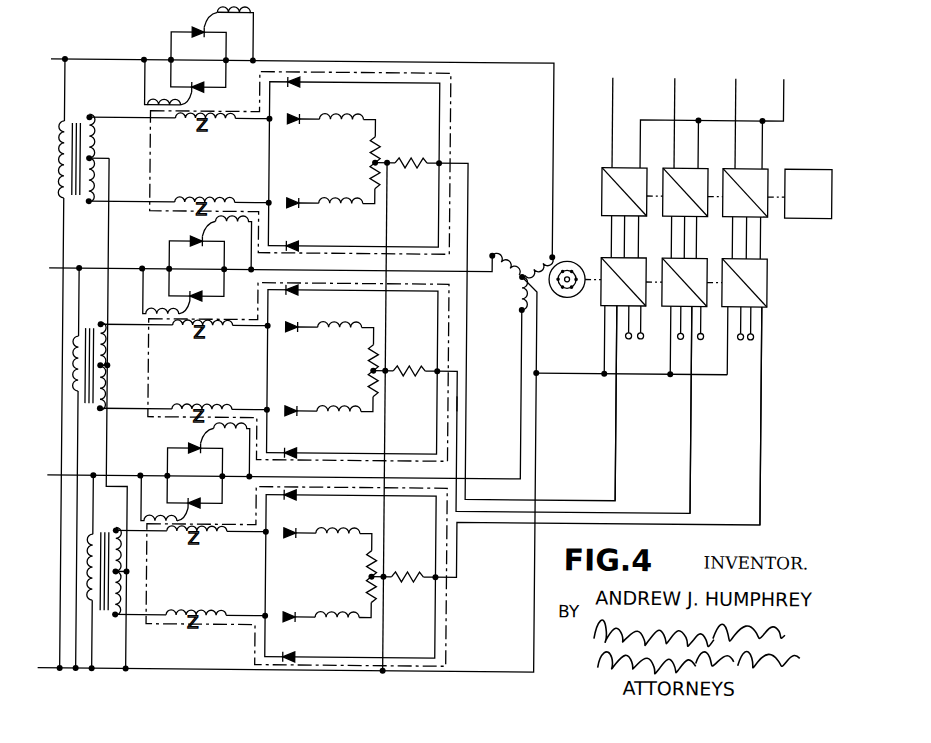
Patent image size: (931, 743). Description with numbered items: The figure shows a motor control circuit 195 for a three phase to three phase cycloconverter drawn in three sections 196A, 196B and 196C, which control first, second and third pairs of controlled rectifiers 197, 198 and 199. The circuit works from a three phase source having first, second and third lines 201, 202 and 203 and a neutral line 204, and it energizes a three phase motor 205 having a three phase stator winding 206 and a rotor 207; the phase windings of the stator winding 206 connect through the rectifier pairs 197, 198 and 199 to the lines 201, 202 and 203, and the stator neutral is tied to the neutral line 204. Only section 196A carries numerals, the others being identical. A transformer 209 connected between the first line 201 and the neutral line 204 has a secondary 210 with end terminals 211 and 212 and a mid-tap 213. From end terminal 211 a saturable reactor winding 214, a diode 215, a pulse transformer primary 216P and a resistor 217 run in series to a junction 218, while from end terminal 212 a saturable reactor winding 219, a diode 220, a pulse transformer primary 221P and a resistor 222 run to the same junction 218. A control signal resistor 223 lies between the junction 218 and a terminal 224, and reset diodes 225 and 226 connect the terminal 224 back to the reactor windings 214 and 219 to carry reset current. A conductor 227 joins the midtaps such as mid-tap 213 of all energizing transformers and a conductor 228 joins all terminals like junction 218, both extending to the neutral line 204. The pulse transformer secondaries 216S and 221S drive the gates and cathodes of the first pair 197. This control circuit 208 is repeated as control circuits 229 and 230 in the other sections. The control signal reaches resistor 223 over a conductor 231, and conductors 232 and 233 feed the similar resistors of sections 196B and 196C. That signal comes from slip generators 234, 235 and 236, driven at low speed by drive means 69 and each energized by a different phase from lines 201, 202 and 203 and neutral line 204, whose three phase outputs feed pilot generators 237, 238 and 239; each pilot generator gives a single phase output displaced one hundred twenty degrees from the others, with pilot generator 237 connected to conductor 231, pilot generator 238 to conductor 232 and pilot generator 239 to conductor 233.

The first line 201 is at (56, 60).
The second line 202 is at (60, 270).
The third line 203 is at (62, 477).
The neutral line 204 is at (62, 670).
The first pair of controlled rectifiers 197 is at (168, 42).
The second pair of controlled rectifiers 198 is at (168, 252).
The third pair of controlled rectifiers 199 is at (168, 460).
The pulse transformer secondary 216S is at (255, 15).
The pulse transformer secondary 221S is at (140, 104).
The transformer 209 is at (62, 162).
The secondary 210 is at (88, 130).
The end terminal 211 is at (87, 119).
The end terminal 212 is at (87, 203).
The mid-tap 213 is at (90, 160).
The conductor 227 is at (107, 250).
The saturable reactor winding 214 is at (205, 126).
The saturable reactor winding 219 is at (212, 200).
The control circuit 208 is at (303, 160).
The cycloconverter section 196A is at (452, 110).
The cycloconverter section 196B is at (450, 318).
The cycloconverter section 196C is at (448, 600).
The reset diode 225 is at (297, 78).
The diode 215 is at (300, 116).
The pulse transformer primary 216P is at (345, 116).
The resistor 217 is at (370, 140).
The junction 218 is at (380, 160).
The control signal resistor 223 is at (408, 166).
The diode 220 is at (292, 200).
The pulse transformer primary 221P is at (330, 204).
The resistor 222 is at (370, 188).
The reset diode 226 is at (298, 246).
The conductor 228 is at (387, 240).
The terminal 224 is at (440, 162).
The control circuit 229 is at (303, 371).
The conductor 231 is at (460, 366).
The conductor 232 is at (458, 404).
The control circuit 230 is at (303, 576).
The conductor 233 is at (458, 552).
The three phase motor 205 is at (528, 235).
The three phase stator winding 206 is at (512, 270).
The rotor 207 is at (572, 260).
The motor control circuit 195 is at (587, 418).
The slip generator 234 is at (640, 176).
The slip generator 235 is at (700, 176).
The slip generator 236 is at (768, 176).
The pilot generator 237 is at (640, 266).
The pilot generator 238 is at (700, 266).
The pilot generator 239 is at (768, 266).
The drive means 69 is at (829, 180).